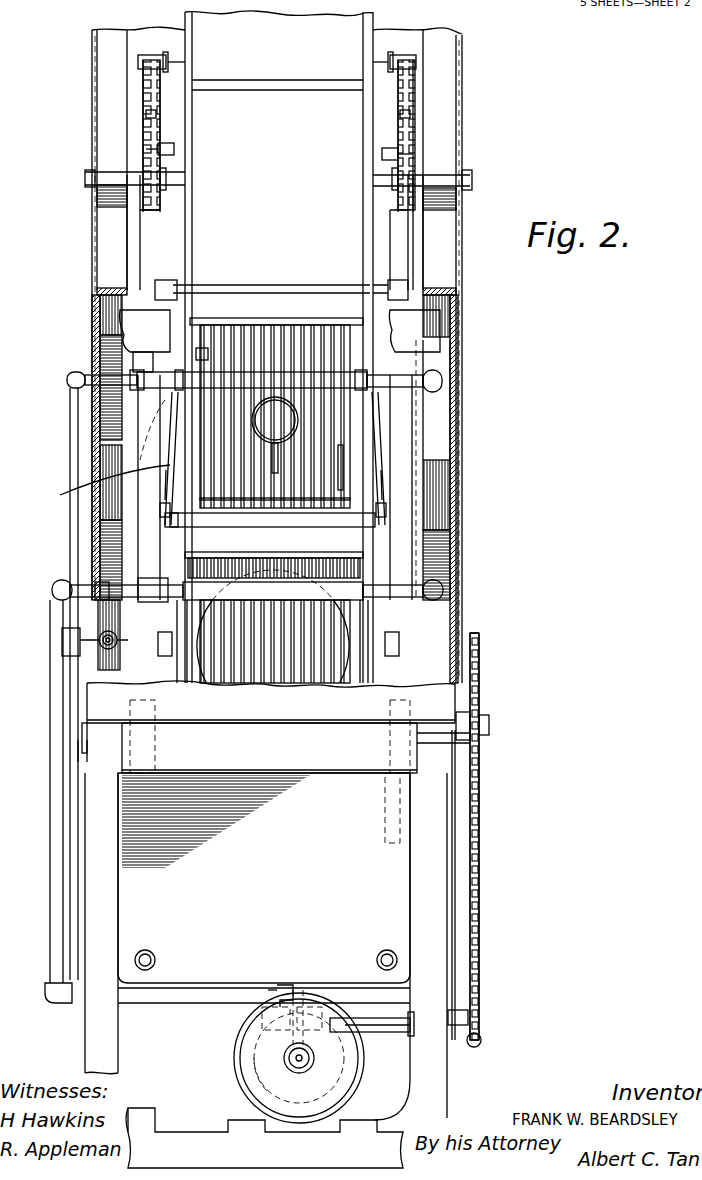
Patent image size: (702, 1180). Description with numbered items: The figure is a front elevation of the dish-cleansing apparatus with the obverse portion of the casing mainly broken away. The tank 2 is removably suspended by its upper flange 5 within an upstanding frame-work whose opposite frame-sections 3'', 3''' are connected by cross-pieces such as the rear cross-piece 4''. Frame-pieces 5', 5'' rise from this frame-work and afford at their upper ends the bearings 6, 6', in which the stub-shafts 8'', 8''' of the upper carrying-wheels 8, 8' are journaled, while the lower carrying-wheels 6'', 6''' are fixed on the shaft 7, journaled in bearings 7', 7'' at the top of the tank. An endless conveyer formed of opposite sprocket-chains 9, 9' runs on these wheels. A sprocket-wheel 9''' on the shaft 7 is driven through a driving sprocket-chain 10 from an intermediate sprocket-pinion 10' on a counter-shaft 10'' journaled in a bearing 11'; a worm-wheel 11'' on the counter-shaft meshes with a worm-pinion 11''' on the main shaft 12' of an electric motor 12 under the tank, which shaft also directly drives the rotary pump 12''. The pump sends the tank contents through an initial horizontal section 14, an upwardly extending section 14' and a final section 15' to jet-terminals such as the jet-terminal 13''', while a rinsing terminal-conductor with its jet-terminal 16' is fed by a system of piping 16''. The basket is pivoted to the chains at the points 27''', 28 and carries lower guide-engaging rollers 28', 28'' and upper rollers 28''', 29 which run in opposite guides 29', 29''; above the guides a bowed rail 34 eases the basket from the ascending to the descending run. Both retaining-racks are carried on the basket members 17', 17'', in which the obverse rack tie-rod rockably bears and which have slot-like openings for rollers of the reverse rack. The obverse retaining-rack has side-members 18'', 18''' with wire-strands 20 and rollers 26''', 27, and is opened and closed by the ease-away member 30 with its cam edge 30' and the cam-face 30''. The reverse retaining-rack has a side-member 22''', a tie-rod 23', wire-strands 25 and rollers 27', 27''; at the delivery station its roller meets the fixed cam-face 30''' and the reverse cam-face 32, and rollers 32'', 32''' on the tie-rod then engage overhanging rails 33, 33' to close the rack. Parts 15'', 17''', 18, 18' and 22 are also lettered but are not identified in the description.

The tank 2 is at (264, 878).
The frame-section 3'' is at (101, 923).
The frame-section 3''' is at (411, 946).
The rear cross-piece 4'' is at (269, 748).
The flange 5 is at (271, 646).
The frame-piece 5' is at (94, 447).
The frame-piece 5'' is at (458, 489).
The bearing 6 is at (138, 313).
The bearing 6' is at (417, 355).
The carrying-wheel 6'' is at (155, 736).
The carrying-wheel 6''' is at (386, 771).
The shaft 7 is at (480, 726).
The bearing 7' is at (52, 742).
The bearing 7'' is at (464, 744).
The carrying-wheel 8 is at (136, 120).
The carrying-wheel 8' is at (421, 120).
The stub-shaft 8'' is at (123, 229).
The stub-shaft 8''' is at (435, 229).
The sprocket-chain 9 is at (139, 136).
The sprocket-chain 9' is at (419, 136).
The sprocket-wheel 9''' is at (488, 836).
The driving sprocket-chain 10 is at (474, 885).
The intermediate sprocket-pinion 10' is at (476, 1028).
The counter-shaft 10'' is at (372, 1017).
The bearing 11' is at (312, 1021).
The worm-wheel 11'' is at (293, 1000).
The worm-pinion 11''' is at (300, 1071).
The motor 12 is at (286, 1058).
The main shaft 12' is at (299, 1058).
The rotary pump 12'' is at (237, 1083).
The jet-terminal 13''' is at (247, 590).
The initial horizontal section 14 is at (264, 1005).
The upwardly extending section 14' is at (45, 801).
The final section 15' is at (117, 634).
The rings 15'' is at (266, 954).
The jet-terminal 16' is at (252, 380).
The system of piping 16'' is at (96, 665).
The member 17' is at (270, 355).
The member 17'' is at (267, 347).
The right lower column 17''' is at (382, 653).
The top bar 18 is at (277, 309).
The lower comb bar 18' is at (275, 518).
The side-member 18'' is at (251, 339).
The side-member 18''' is at (376, 464).
The wire-strands 20 is at (305, 326).
The ring 22 is at (329, 435).
The side-member 22''' is at (89, 481).
The tie-rod 23' is at (211, 526).
The wire-strands 25 is at (240, 326).
The roller 26''' is at (201, 380).
The roller 27 is at (348, 380).
The roller 27' is at (143, 380).
The roller 27'' is at (404, 367).
The pivot point 27''' is at (145, 63).
The pivot point 28 is at (407, 62).
The guide-engaging roller 28' is at (146, 487).
The guide-engaging roller 28'' is at (396, 487).
The guide-engaging roller 28''' is at (147, 430).
The guide-engaging roller 29 is at (286, 458).
The guide 29' is at (152, 485).
The guide 29'' is at (393, 485).
The ease-away member 30 is at (145, 348).
The cam edge 30' is at (271, 294).
The cam-face 30'' is at (270, 419).
The direct cam-face 30''' is at (280, 309).
The reverse cam-face 32 is at (183, 285).
The roller 32'' is at (152, 507).
The roller 32''' is at (392, 507).
The overhanging rail 33 is at (161, 139).
The overhanging rail 33' is at (397, 145).
The rail 34 is at (456, 485).